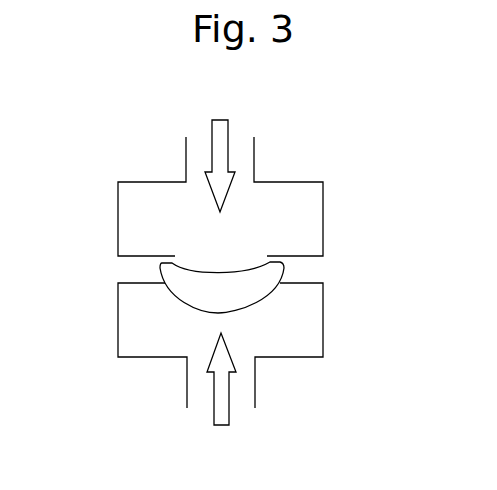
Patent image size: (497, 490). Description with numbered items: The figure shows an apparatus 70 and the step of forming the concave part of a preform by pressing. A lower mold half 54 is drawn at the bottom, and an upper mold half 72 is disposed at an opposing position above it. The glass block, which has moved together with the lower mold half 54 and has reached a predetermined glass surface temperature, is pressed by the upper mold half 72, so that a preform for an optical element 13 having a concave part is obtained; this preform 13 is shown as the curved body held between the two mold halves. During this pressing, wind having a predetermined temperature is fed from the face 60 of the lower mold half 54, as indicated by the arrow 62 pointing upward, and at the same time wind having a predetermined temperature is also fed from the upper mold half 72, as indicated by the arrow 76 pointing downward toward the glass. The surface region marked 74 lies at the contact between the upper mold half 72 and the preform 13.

The apparatus 70 is at (404, 201).
The upper mold half 72 is at (312, 203).
The lower mold half 54 is at (300, 346).
The arrow 76 is at (220, 126).
The arrow 62 is at (218, 418).
The preform for an optical element 13 is at (200, 292).
The face of the lower mold half 60 is at (243, 290).
The concave surface 74 is at (221, 283).